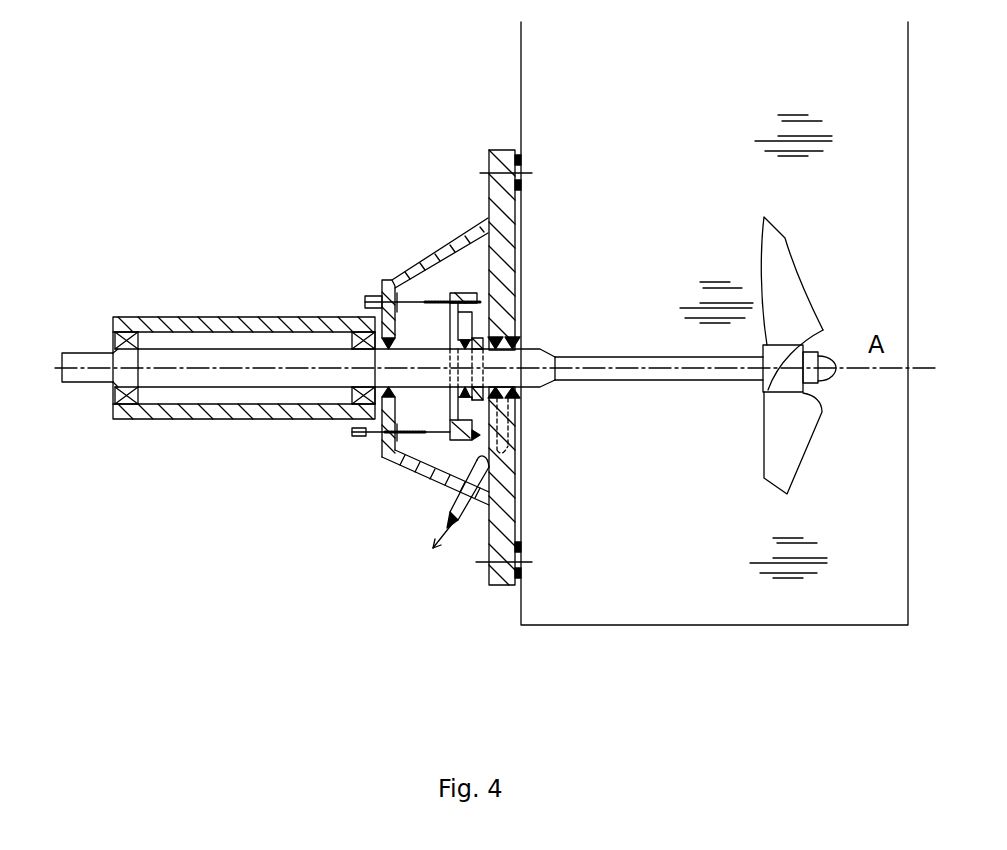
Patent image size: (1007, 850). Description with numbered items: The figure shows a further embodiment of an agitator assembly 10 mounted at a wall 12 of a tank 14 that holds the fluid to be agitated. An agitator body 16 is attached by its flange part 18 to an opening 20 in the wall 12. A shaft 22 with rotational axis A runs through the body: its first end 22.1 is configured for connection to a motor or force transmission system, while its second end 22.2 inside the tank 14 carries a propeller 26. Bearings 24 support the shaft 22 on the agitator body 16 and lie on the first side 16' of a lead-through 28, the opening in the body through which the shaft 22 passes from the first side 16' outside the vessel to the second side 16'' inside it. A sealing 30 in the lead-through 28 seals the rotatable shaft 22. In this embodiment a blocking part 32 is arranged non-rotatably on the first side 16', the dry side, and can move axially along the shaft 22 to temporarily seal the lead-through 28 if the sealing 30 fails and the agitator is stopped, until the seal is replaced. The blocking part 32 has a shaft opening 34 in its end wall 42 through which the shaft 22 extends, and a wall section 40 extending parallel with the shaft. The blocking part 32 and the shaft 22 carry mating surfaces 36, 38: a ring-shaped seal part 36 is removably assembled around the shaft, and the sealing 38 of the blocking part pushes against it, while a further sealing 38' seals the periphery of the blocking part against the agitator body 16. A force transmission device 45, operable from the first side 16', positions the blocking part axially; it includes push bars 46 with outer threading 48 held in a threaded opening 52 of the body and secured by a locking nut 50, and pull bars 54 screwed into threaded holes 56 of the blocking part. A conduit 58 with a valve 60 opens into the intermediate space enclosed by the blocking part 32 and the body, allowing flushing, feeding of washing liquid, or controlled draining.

The agitator assembly 10 is at (429, 173).
The wall 12 is at (521, 132).
The tank 14 is at (720, 272).
The agitator body 16 is at (565, 221).
The first side 16' is at (400, 188).
The second side 16'' is at (628, 187).
The flange part 18 is at (489, 178).
The opening 20 is at (528, 522).
The shaft 22 is at (190, 355).
The first end 22.1 is at (72, 357).
The second end 22.2 is at (755, 393).
The bearings 24 is at (132, 333).
The propeller 26 is at (792, 316).
The lead-through 28 is at (546, 397).
The sealing 30 is at (541, 336).
The blocking part 32 is at (432, 302).
The shaft opening 34 is at (452, 397).
The mating surface / ring shaped seal part 36 is at (544, 403).
The mating surface / sealing 38 is at (526, 422).
The sealing 38' is at (516, 303).
The wall section 40 is at (470, 296).
The end wall 42 is at (373, 300).
The force transmission device 45 is at (335, 302).
The push bars 46 is at (450, 473).
The outer threading 48 is at (395, 462).
The locking nut 50 is at (368, 441).
The threaded opening 52 is at (385, 456).
The pull bars 54 is at (420, 298).
The threaded holes 56 is at (478, 318).
The conduit 58 is at (432, 515).
The valve 60 is at (455, 524).